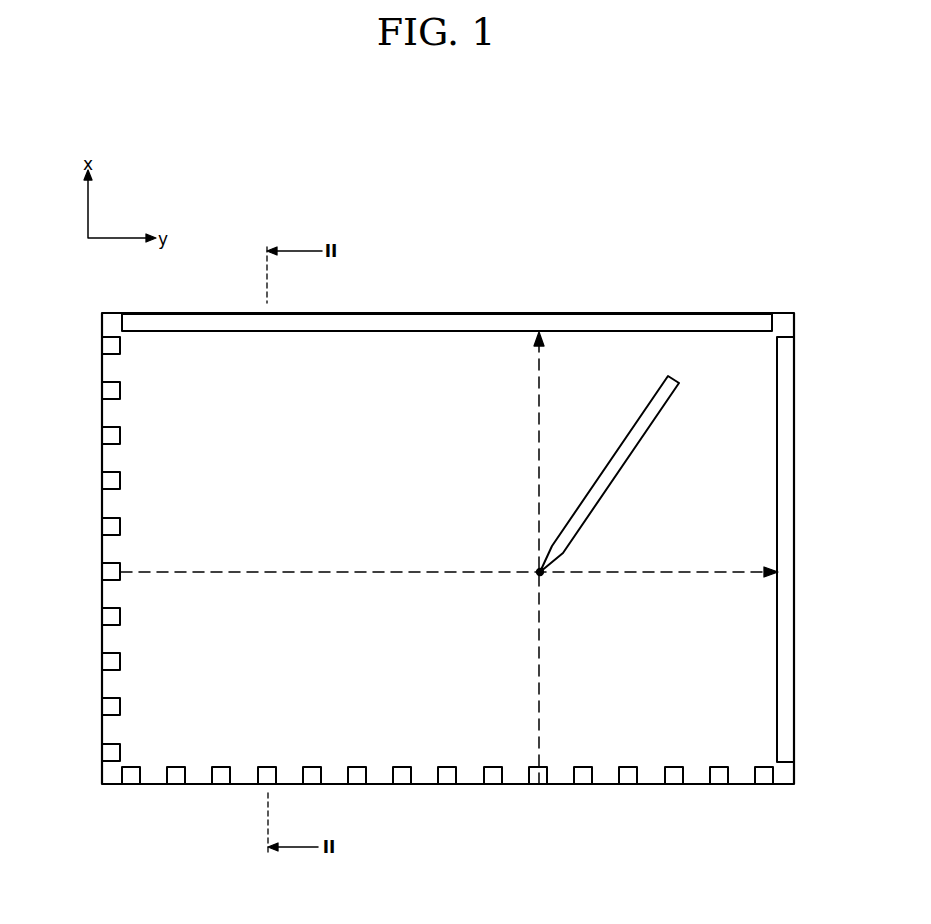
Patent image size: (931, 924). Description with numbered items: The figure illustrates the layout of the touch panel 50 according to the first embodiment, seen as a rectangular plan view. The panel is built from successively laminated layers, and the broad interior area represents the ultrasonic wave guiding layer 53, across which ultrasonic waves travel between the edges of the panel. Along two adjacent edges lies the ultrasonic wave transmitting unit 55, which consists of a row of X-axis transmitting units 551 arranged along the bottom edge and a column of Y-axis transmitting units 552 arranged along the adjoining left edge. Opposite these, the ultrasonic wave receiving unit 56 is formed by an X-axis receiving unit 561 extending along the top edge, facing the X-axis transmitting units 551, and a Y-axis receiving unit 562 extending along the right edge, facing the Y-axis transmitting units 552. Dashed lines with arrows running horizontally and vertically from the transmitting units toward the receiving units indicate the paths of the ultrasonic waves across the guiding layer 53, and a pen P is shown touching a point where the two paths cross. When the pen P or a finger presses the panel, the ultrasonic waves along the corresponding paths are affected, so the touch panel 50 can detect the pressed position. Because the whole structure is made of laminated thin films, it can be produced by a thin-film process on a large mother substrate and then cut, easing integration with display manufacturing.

The touch panel 50 is at (438, 222).
The ultrasonic wave guiding layer 53 is at (468, 720).
The ultrasonic wave transmitting unit 55 is at (408, 620).
The X-axis transmitting units 551 is at (223, 781).
The Y-axis transmitting units 552 is at (108, 662).
The ultrasonic wave receiving unit 56 is at (475, 493).
The X-axis receiving unit 561 is at (748, 318).
The Y-axis receiving unit 562 is at (786, 353).
The pen P is at (658, 388).